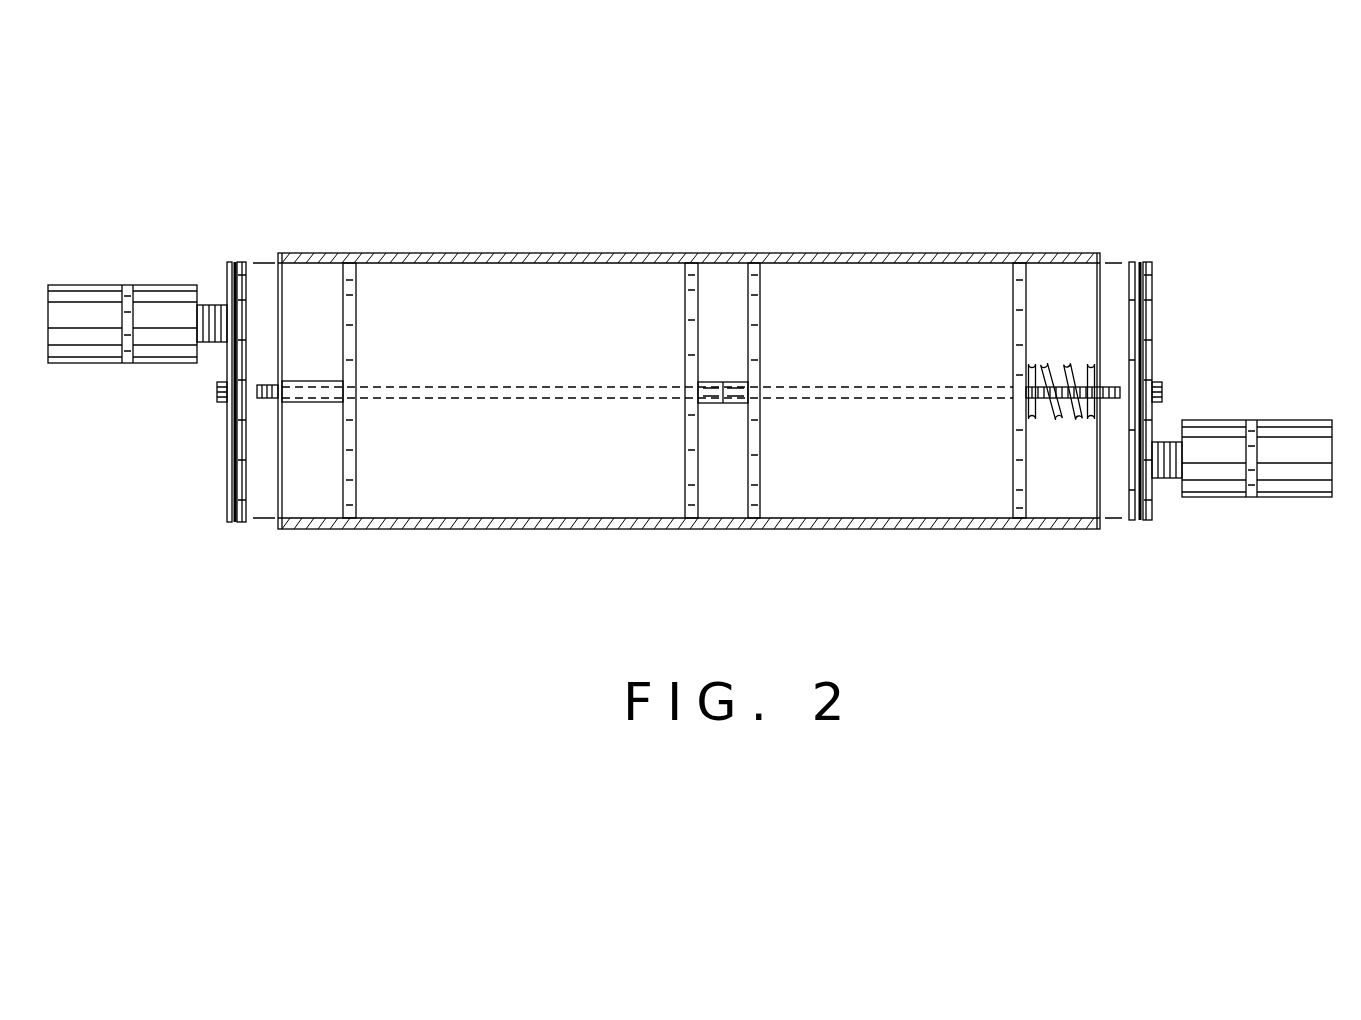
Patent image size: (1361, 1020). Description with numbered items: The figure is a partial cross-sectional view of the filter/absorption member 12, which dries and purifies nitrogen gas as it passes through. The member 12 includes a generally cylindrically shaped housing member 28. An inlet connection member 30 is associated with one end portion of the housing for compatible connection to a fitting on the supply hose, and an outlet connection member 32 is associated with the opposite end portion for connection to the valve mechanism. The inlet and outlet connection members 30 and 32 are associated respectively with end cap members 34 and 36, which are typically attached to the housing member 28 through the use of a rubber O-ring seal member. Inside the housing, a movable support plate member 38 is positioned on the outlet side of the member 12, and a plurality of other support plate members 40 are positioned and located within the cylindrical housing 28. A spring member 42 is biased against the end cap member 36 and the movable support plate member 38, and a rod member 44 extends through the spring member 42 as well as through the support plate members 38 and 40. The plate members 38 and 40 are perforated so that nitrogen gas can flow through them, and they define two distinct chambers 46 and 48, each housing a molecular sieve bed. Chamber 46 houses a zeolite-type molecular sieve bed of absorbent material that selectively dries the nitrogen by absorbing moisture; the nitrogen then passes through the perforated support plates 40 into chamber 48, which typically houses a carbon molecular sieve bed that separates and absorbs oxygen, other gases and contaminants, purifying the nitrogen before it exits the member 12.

The filter/absorption member 12 is at (783, 133).
The housing member 28 is at (930, 262).
The inlet connection member 30 is at (90, 285).
The outlet connection member 32 is at (1300, 424).
The end cap member 34 is at (240, 262).
The end cap member 36 is at (1140, 262).
The movable support plate member 38 is at (1013, 312).
The support plate members 40 is at (357, 304).
The spring member 42 is at (1060, 422).
The rod member 44 is at (268, 400).
The chamber 46 is at (547, 474).
The chamber 48 is at (937, 479).